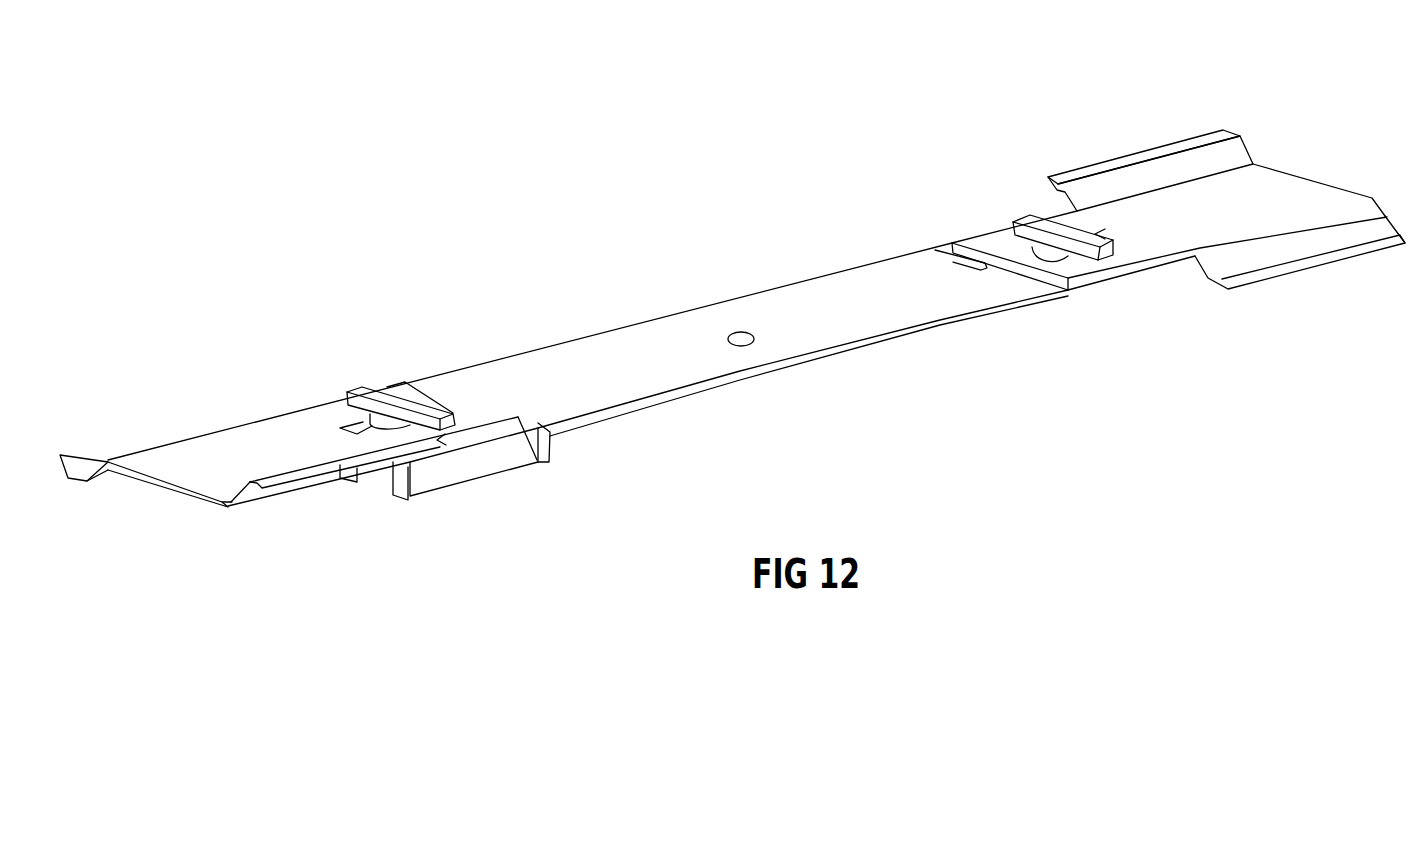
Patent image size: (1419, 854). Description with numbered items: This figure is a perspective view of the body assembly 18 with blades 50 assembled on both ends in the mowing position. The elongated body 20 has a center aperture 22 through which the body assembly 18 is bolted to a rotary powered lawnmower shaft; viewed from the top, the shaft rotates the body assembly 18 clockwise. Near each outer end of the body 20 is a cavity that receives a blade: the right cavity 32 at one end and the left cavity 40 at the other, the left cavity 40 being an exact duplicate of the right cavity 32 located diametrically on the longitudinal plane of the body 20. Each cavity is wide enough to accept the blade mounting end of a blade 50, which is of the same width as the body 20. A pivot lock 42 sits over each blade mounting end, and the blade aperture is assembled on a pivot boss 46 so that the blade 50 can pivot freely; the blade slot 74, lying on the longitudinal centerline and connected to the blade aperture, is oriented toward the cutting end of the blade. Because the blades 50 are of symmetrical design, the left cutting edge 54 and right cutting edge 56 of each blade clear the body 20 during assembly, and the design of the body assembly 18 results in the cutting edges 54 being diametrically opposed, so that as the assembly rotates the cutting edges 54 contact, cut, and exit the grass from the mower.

The body assembly 18 is at (932, 341).
The body 20 is at (837, 327).
The center aperture 22 is at (747, 348).
The right cavity 32 is at (468, 483).
The left cavity 40 is at (978, 257).
The pivot lock 42 is at (350, 388).
The pivot boss 46 is at (386, 424).
The blade 50 is at (165, 481).
The left cutting edge 54 is at (60, 455).
The right cutting edge 56 is at (315, 476).
The blade slot 74 is at (437, 437).